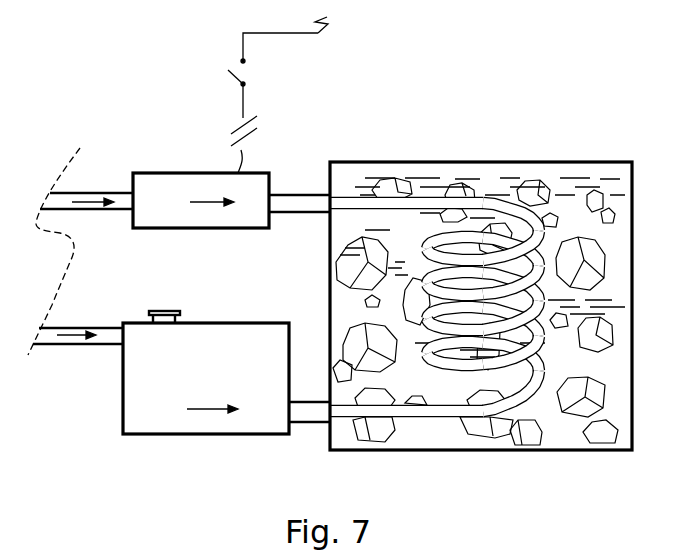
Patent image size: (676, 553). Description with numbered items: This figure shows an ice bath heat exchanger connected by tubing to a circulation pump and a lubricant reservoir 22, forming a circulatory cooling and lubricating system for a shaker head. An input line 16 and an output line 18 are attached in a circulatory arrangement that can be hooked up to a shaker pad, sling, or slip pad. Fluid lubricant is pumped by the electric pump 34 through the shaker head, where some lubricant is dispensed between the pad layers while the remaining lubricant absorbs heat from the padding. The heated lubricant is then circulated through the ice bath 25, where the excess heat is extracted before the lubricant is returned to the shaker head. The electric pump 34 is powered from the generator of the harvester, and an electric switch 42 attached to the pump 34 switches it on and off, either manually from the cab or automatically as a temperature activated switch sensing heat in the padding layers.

The input line 16 is at (85, 192).
The output line 18 is at (88, 325).
The reservoir tank 22 is at (265, 323).
The ice bath 25 is at (532, 160).
The electric pump 34 is at (224, 215).
The electric switch 42 is at (242, 79).